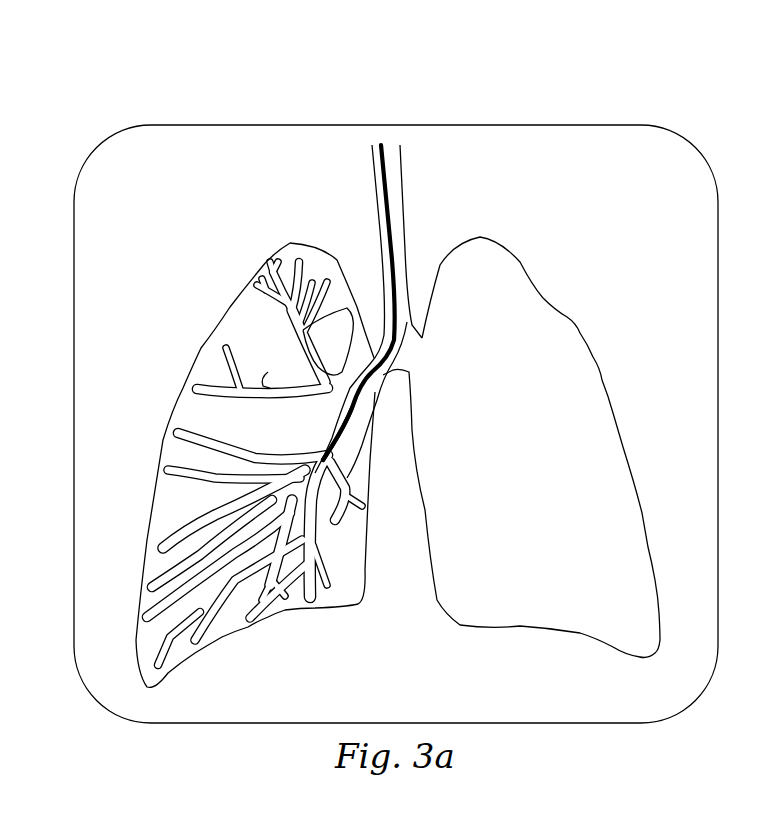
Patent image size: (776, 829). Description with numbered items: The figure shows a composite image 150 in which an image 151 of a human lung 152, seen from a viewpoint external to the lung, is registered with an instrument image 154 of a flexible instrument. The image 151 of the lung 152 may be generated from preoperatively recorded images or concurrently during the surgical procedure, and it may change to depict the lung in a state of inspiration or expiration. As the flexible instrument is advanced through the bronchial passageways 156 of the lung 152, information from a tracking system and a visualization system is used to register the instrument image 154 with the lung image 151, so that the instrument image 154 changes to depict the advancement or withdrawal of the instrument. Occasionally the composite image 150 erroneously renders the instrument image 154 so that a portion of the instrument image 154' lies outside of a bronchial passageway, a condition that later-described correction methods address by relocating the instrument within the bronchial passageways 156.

The composite image 150 is at (267, 96).
The image of a human lung 151 is at (181, 242).
The human lung 152 is at (288, 235).
The instrument image 154 is at (390, 311).
The portion of the instrument image 154' is at (304, 429).
The bronchial passageways 156 is at (276, 463).